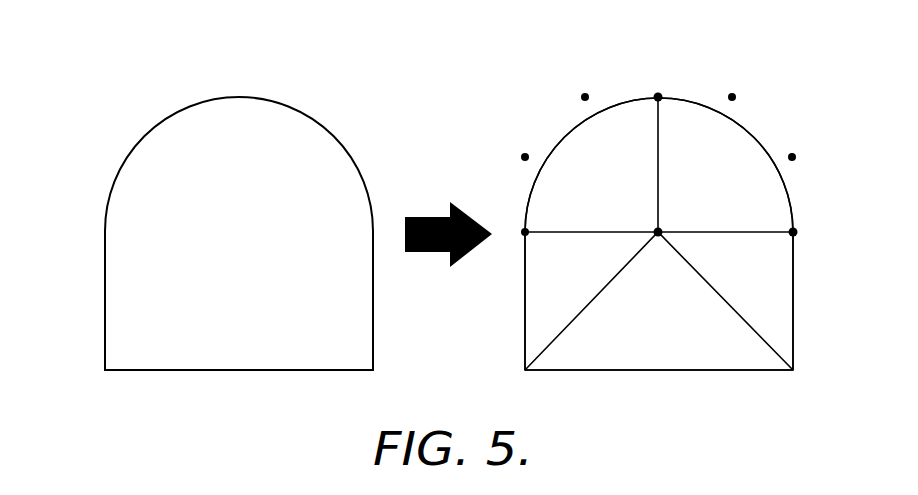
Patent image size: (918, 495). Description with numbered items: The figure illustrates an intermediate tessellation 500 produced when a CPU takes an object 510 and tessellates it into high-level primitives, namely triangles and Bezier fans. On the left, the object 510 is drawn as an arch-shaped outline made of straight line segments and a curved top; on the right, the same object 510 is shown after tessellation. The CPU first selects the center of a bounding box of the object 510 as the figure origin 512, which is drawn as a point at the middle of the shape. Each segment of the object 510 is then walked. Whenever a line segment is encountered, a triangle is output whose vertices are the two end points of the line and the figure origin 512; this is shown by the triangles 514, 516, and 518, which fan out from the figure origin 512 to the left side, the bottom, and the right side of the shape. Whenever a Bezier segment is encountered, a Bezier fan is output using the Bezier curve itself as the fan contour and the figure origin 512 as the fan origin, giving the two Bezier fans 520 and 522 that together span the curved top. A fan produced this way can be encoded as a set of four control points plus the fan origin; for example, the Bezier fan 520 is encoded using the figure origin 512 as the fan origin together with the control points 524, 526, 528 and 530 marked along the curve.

The tag pattern construction 500 is at (88, 108).
The object 510 is at (317, 122).
The figure origin 512 is at (657, 237).
The triangle 514 is at (528, 289).
The triangle 516 is at (660, 358).
The triangle 518 is at (788, 293).
The Bezier fan 520 is at (800, 190).
The Bezier fan 522 is at (522, 190).
The control point 524 is at (797, 232).
The control point 526 is at (793, 155).
The control point 528 is at (733, 95).
The control point 530 is at (660, 95).